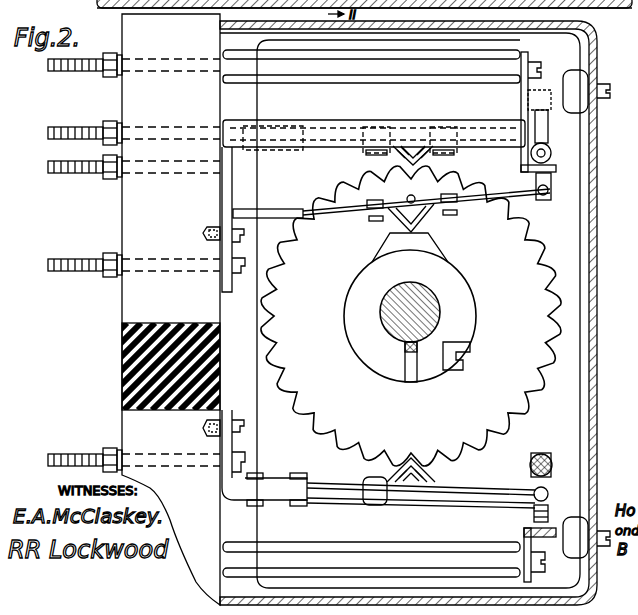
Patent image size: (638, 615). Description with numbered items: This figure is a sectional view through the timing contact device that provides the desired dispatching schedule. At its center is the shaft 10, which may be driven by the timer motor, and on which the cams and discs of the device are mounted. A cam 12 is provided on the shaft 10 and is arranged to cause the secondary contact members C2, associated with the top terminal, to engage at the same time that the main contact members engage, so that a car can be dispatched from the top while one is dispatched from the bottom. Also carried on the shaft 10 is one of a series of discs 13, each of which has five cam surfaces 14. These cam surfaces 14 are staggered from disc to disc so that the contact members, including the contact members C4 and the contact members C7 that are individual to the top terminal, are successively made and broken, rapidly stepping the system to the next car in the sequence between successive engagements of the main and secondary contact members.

The shaft 10 is at (433, 312).
The cam 12 is at (430, 249).
The disc 13 is at (515, 347).
The cam surface 14 is at (413, 160).
The secondary contact members C2 is at (544, 197).
The contact members C4 is at (548, 493).
The contact members C7 is at (531, 512).